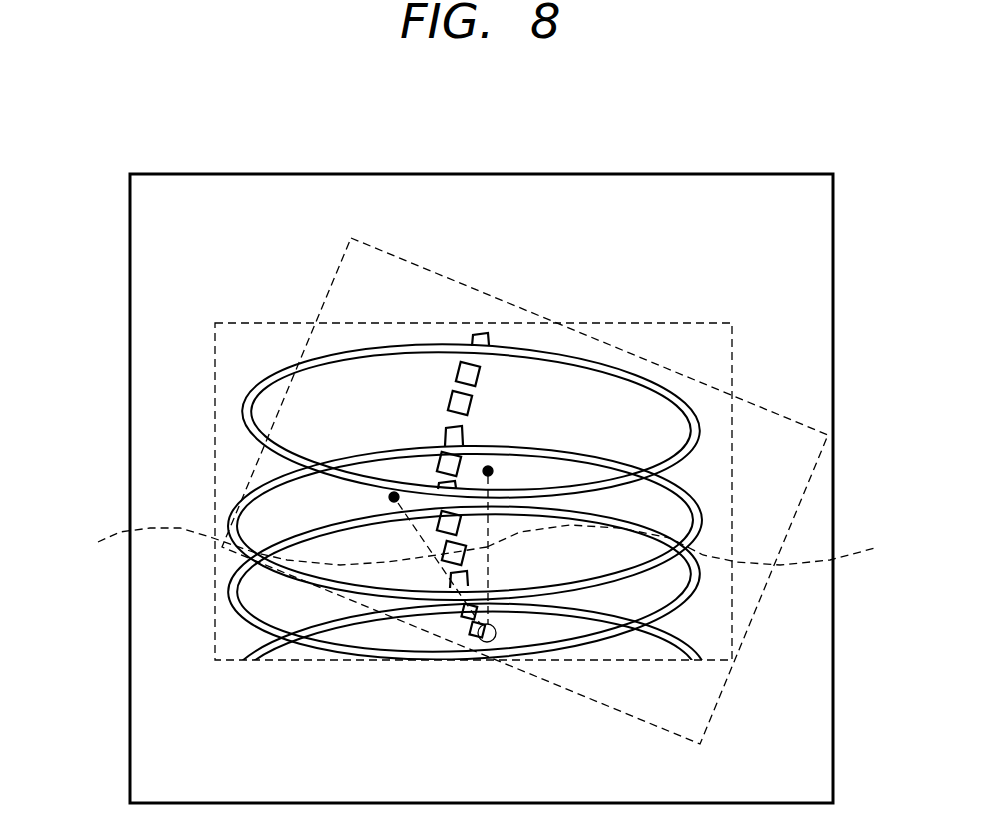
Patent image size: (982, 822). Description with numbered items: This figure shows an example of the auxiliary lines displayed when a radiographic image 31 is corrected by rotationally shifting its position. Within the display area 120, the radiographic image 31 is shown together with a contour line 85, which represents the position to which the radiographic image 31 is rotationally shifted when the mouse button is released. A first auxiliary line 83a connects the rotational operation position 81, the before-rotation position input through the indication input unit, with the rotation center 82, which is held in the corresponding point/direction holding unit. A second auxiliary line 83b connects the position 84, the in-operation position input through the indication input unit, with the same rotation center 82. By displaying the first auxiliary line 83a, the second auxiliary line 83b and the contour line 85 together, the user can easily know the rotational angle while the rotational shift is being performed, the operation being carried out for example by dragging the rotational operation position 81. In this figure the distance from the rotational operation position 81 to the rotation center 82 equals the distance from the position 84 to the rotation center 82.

The display screen 120 is at (742, 174).
The radiographic image 31 is at (620, 322).
The contour line 85 is at (427, 262).
The rotational operation position 81 is at (394, 497).
The rotation center 82 is at (496, 636).
The position 84 is at (488, 471).
The first auxiliary line 83a is at (268, 546).
The second auxiliary line 83b is at (708, 545).